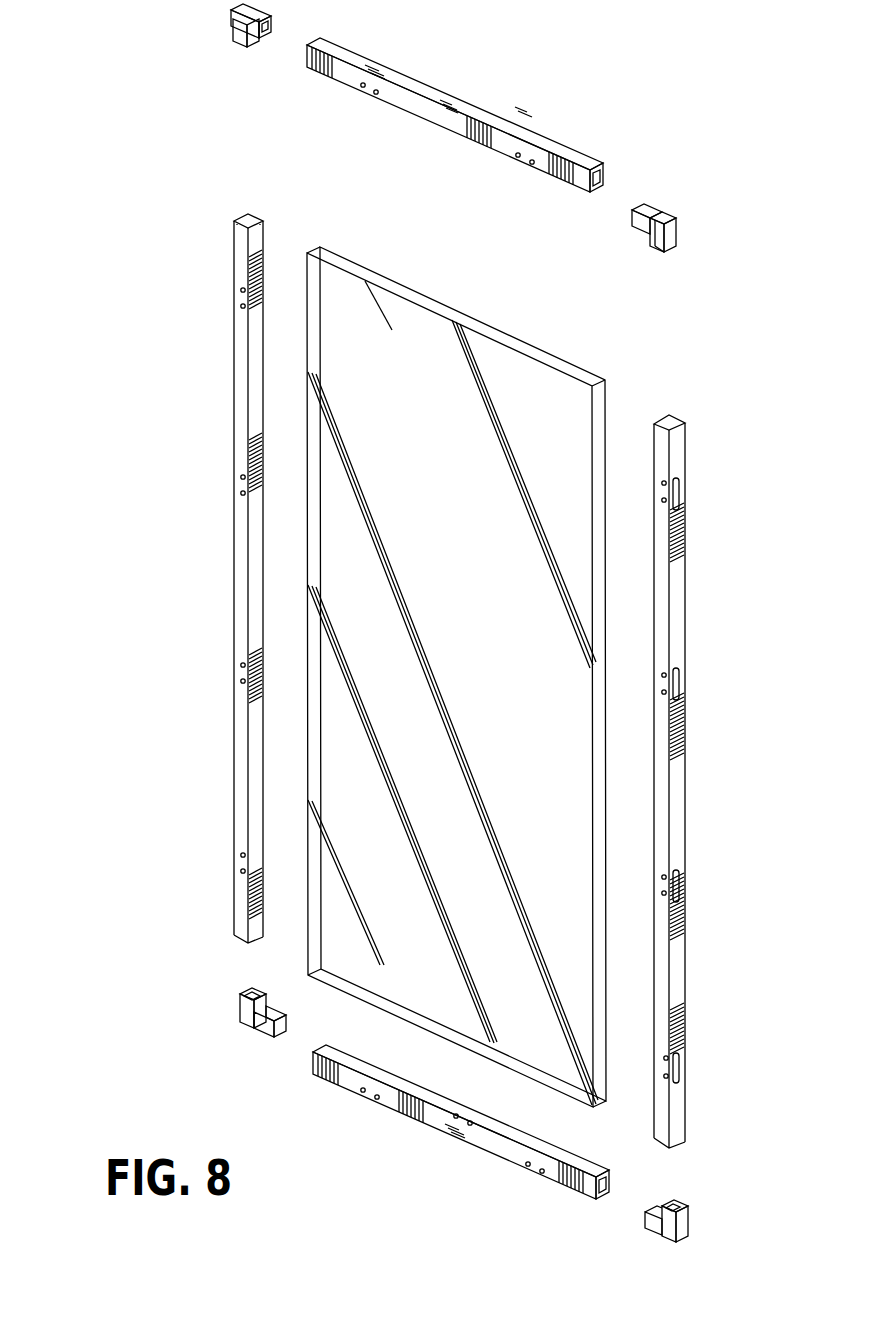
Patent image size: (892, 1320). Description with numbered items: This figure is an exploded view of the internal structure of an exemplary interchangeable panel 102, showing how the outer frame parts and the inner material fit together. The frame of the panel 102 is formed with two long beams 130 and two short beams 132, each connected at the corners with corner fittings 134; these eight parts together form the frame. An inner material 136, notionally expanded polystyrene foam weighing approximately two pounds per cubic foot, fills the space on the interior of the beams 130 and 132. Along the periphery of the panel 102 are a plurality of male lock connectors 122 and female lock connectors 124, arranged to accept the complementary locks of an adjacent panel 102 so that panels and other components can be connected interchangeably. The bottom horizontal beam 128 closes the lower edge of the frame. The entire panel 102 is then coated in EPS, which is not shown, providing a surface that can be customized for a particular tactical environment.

The panel 102 is at (112, 226).
The male lock connector 122 is at (680, 678).
The female lock connector 124 is at (676, 585).
The bottom horizontal frame member 128 is at (461, 1122).
The long beam 130 is at (234, 527).
The short beam 132 is at (497, 129).
The corner fitting 134 is at (677, 218).
The inner material 136 is at (572, 787).